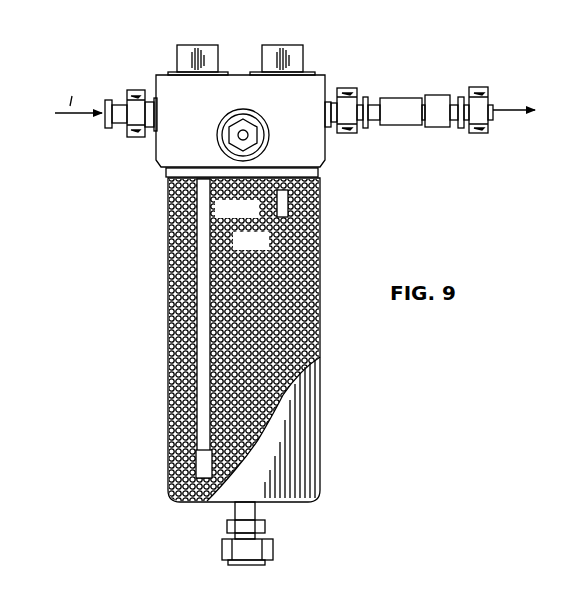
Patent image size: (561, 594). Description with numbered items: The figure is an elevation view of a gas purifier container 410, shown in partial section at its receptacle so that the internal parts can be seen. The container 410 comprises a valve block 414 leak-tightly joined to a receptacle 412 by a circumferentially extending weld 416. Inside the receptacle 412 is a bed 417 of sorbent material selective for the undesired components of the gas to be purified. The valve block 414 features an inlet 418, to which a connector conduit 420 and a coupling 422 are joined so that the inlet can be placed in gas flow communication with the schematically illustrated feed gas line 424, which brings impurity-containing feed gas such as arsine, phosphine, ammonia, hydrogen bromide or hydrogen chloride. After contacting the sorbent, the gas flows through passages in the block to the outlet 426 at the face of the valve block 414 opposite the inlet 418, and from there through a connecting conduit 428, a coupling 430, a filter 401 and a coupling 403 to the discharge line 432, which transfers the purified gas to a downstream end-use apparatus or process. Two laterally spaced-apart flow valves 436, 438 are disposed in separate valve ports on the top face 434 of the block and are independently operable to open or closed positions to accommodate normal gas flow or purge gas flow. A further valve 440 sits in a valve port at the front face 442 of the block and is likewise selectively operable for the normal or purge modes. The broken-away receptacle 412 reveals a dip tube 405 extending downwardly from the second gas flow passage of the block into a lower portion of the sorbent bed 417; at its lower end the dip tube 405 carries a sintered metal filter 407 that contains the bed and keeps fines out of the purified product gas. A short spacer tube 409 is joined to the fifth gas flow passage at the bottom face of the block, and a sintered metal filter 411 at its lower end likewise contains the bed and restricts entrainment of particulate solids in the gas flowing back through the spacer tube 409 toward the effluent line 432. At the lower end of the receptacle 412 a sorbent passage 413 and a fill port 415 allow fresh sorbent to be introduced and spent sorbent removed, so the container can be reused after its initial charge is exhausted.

The filter 401 is at (397, 108).
The coupling 403 is at (481, 128).
The dip tube 405 is at (202, 318).
The sintered metal filter 407 is at (202, 462).
The spacer tube 409 is at (280, 184).
The container 410 is at (160, 213).
The sintered metal filter 411 is at (282, 214).
The receptacle 412 is at (317, 327).
The sorbent passage 413 is at (255, 510).
The valve block 414 is at (312, 93).
The fill port 415 is at (224, 548).
The weld 416 is at (320, 170).
The bed 417 is at (310, 267).
The inlet 418 is at (153, 100).
The connector conduit 420 is at (150, 128).
The coupling 422 is at (127, 127).
The feed gas line 424 is at (66, 98).
The outlet 426 is at (329, 98).
The connecting conduit 428 is at (330, 97).
The coupling 430 is at (350, 128).
The discharge line 432 is at (508, 110).
The top face 434 is at (240, 76).
The flow valve 436 is at (176, 72).
The flow valve 438 is at (312, 73).
The valve 440 is at (222, 122).
The front face 442 is at (258, 105).